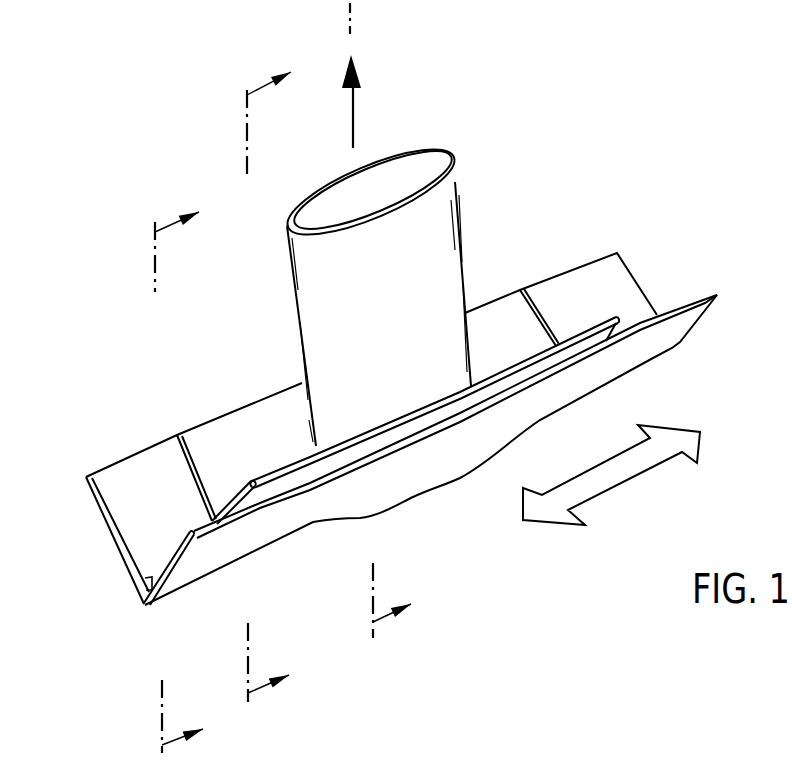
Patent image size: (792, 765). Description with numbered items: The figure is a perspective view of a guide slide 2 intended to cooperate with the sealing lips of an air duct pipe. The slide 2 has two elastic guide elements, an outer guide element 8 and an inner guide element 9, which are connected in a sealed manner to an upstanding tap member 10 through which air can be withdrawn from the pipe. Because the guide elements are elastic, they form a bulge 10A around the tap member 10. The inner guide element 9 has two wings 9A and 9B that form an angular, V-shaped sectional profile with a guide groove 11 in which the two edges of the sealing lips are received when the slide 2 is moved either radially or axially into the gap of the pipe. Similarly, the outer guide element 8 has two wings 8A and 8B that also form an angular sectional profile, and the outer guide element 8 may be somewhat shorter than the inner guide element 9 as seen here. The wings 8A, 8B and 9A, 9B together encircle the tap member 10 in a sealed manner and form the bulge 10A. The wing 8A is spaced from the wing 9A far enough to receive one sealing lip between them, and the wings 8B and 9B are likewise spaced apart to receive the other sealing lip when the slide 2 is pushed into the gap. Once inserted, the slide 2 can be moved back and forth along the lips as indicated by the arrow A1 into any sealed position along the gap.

The guide slide 2 is at (526, 183).
The outer guide element 8 is at (492, 318).
The wing of outer guide element 8A is at (583, 343).
The wing of outer guide element 8B is at (250, 410).
The inner guide element 9 is at (130, 478).
The wing of inner guide element 9A is at (172, 560).
The wing of inner guide element 9B is at (150, 460).
The tap member 10 is at (327, 177).
The bulge 10A is at (414, 490).
The guide groove 11 is at (143, 590).
The arrow A1 is at (625, 470).